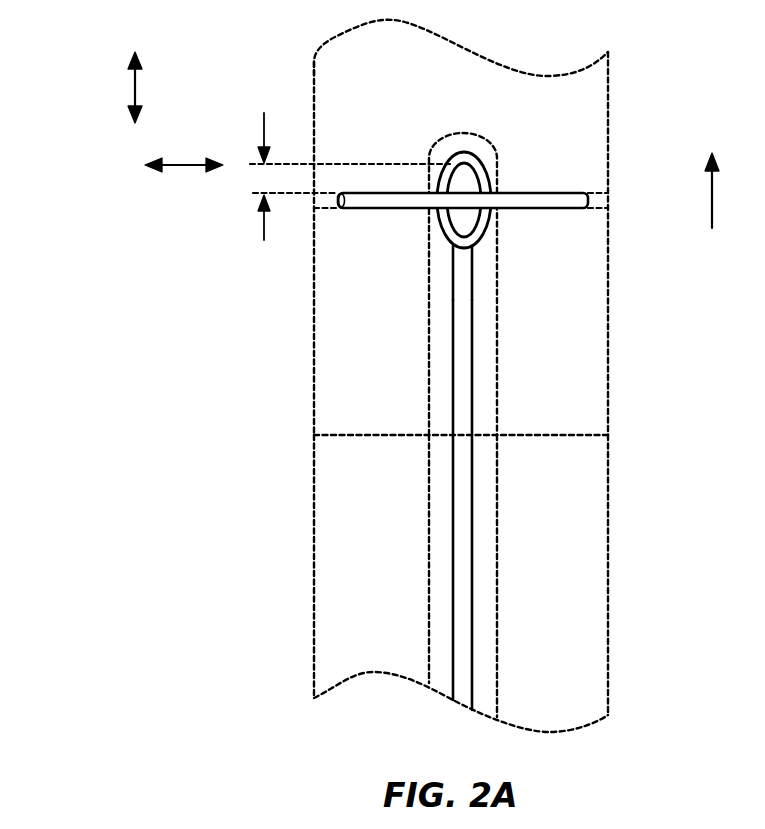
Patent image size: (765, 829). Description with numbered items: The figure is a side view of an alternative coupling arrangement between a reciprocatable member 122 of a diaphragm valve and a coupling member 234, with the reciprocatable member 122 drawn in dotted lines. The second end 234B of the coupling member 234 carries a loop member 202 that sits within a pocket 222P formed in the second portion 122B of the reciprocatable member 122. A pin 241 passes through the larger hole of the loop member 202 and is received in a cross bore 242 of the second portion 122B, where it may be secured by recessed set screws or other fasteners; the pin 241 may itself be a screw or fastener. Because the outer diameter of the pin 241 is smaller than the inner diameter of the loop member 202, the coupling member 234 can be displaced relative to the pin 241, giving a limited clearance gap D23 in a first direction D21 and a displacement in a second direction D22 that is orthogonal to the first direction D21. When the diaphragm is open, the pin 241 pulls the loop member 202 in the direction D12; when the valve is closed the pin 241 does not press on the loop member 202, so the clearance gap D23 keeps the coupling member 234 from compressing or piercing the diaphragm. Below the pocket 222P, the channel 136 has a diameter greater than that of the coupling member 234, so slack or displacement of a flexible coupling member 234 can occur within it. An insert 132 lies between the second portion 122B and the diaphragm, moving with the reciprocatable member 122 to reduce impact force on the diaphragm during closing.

The reciprocatable member 122 is at (330, 40).
The second portion of the reciprocatable member 122B is at (313, 383).
The insert 132 is at (313, 560).
The channel 136 is at (428, 500).
The pocket 222P is at (498, 327).
The cross bore 242 is at (593, 190).
The coupling member 234 is at (446, 342).
The second end of the coupling member 234B is at (477, 248).
The loop member 202 is at (470, 153).
The pin 241 is at (405, 193).
The second direction D22 is at (133, 80).
The first direction D21 is at (193, 168).
The clearance gap D23 is at (264, 237).
The direction D12 is at (705, 185).